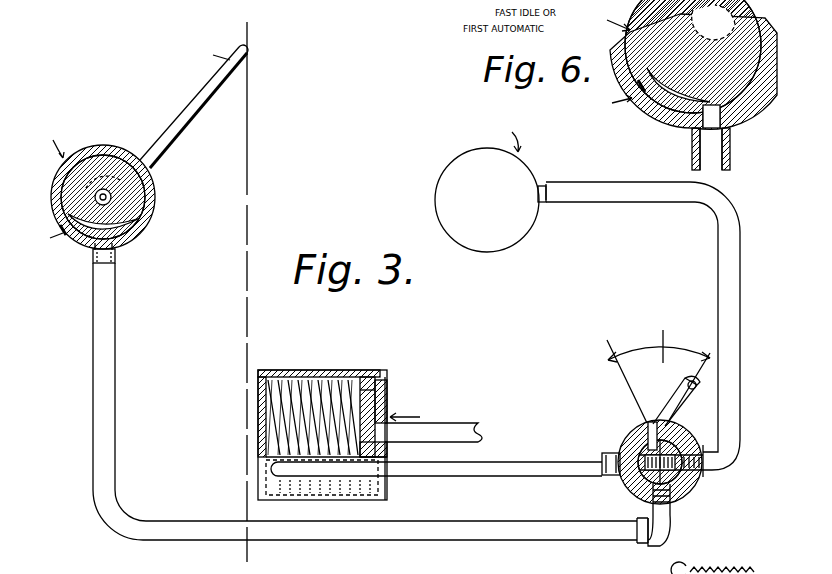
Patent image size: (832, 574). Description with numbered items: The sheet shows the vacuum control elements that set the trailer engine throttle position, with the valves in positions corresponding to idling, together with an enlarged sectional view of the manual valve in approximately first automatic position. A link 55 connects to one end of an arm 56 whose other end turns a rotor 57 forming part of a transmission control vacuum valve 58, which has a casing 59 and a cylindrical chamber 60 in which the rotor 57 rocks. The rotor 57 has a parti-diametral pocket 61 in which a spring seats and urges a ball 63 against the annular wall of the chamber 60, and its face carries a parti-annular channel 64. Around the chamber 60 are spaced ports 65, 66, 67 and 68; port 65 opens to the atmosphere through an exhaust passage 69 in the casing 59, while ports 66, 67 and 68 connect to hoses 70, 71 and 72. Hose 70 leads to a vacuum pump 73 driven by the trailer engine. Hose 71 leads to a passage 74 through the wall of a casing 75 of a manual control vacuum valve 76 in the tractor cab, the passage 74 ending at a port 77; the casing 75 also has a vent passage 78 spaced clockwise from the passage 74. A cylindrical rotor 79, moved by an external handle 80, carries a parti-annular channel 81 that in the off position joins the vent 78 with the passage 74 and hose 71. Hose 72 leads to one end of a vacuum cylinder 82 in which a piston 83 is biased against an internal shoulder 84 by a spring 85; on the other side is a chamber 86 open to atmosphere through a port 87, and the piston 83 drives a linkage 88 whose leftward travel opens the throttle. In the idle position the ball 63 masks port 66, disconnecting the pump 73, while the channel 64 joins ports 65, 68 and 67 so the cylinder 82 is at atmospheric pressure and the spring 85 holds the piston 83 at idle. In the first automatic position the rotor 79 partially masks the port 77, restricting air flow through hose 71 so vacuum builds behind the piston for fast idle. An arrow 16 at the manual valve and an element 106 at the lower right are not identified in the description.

In FIG. 3, the manual control vacuum valve 16 is at (167, 178).
In FIG. 3, the link 55 is at (660, 422).
In FIG. 3, the arm 56 is at (677, 427).
In FIG. 3, the rotor 57 is at (703, 477).
In FIG. 3, the transmission control vacuum valve 58 is at (610, 414).
In FIG. 3, the casing 59 is at (650, 493).
In FIG. 3, the cylindrical chamber 60 is at (627, 480).
In FIG. 3, the parti-diametral pocket 61 is at (637, 447).
In FIG. 3, the ball 63 is at (688, 452).
In FIG. 3, the parti-annular channel 64 is at (640, 505).
In FIG. 3, the port 65 is at (640, 428).
In FIG. 3, the port 66 is at (713, 448).
In FIG. 3, the port 67 is at (655, 537).
In FIG. 3, the port 68 is at (570, 463).
In FIG. 3, the exhaust passage 69 is at (673, 420).
In FIG. 3, the hose 70 is at (732, 427).
In FIG. 3, the hose 71 is at (563, 535).
In FIG. 6, the hose 71 is at (692, 158).
In FIG. 3, the hose 72 is at (495, 470).
In FIG. 3, the vacuum pump 73 is at (490, 247).
In FIG. 3, the passage 74 is at (110, 248).
In FIG. 6, the passage 74 is at (737, 132).
In FIG. 3, the casing 75 is at (155, 213).
In FIG. 6, the casing 75 is at (670, 123).
In FIG. 6, the manual control vacuum valve 76 is at (631, 120).
In FIG. 3, the port 77 is at (97, 248).
In FIG. 6, the port 77 is at (747, 115).
In FIG. 3, the vent passage 78 is at (63, 233).
In FIG. 6, the vent passage 78 is at (640, 80).
In FIG. 3, the cylindrical rotor 79 is at (137, 200).
In FIG. 6, the cylindrical rotor 79 is at (753, 77).
In FIG. 3, the external handle 80 is at (190, 117).
In FIG. 3, the parti-annular channel 81 is at (127, 227).
In FIG. 6, the parti-annular channel 81 is at (703, 50).
In FIG. 3, the vacuum cylinder 82 is at (260, 433).
In FIG. 3, the piston 83 is at (367, 375).
In FIG. 3, the internal shoulder 84 is at (387, 397).
In FIG. 3, the spring 85 is at (277, 392).
In FIG. 3, the chamber 86 is at (372, 380).
In FIG. 3, the port 87 is at (393, 385).
In FIG. 3, the linkage 88 is at (483, 427).
In FIG. 3, the throttle return spring 106 is at (720, 567).